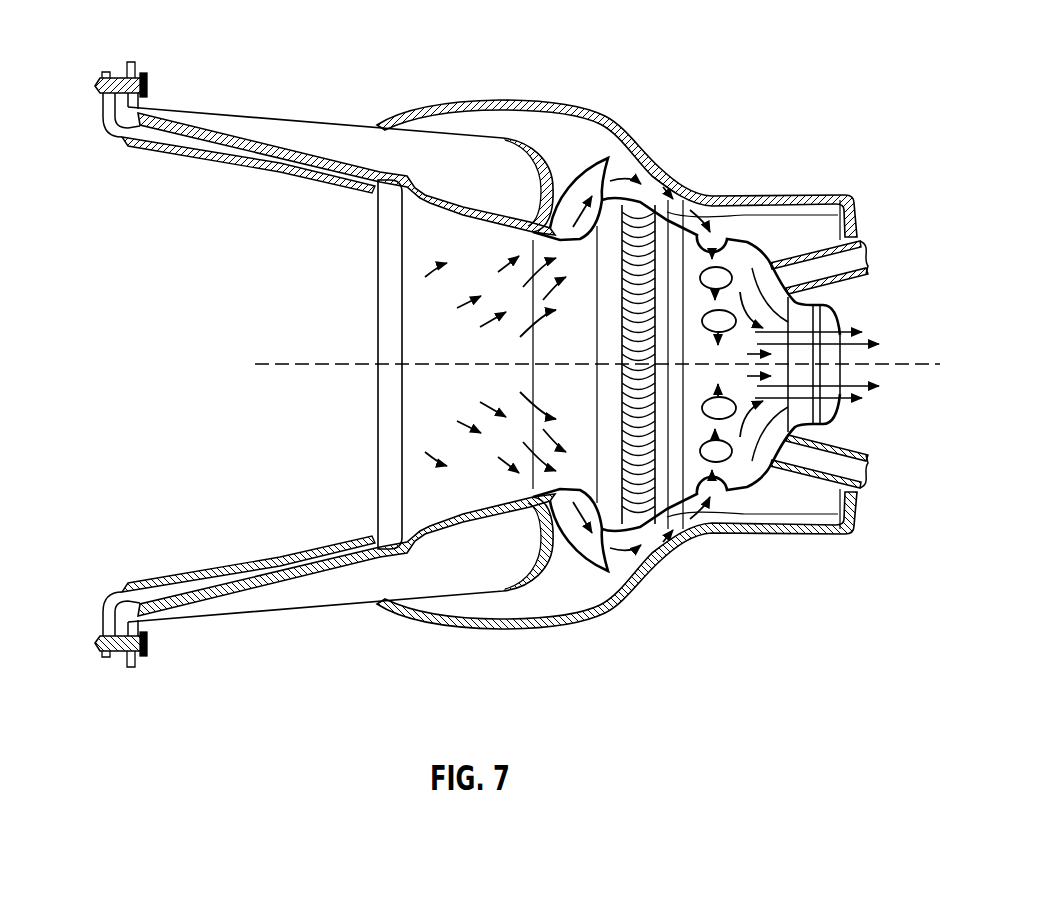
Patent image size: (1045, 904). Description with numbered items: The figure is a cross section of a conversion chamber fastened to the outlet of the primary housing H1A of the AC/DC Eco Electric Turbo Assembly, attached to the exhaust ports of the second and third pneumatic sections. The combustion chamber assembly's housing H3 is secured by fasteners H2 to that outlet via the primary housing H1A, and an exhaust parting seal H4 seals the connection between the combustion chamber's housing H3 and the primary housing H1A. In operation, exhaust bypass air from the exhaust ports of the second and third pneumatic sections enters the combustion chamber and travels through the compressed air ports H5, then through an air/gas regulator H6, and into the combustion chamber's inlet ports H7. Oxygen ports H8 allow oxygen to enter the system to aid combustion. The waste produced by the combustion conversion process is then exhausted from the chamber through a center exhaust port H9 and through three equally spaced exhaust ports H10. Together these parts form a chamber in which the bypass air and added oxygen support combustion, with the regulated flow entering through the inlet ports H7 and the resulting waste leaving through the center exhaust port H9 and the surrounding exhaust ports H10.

The primary housing H1A is at (100, 107).
The fasteners H2 is at (96, 82).
The combustion chamber assembly housing H3 is at (252, 113).
The exhaust parting seal H4 is at (377, 418).
The compressed air ports H5 is at (583, 547).
The air/gas regulator H6 is at (673, 493).
The combustion chamber inlet ports H7 is at (717, 497).
The oxygen ports H8 is at (658, 210).
The center exhaust port H9 is at (840, 327).
The exhaust ports H10 is at (860, 257).